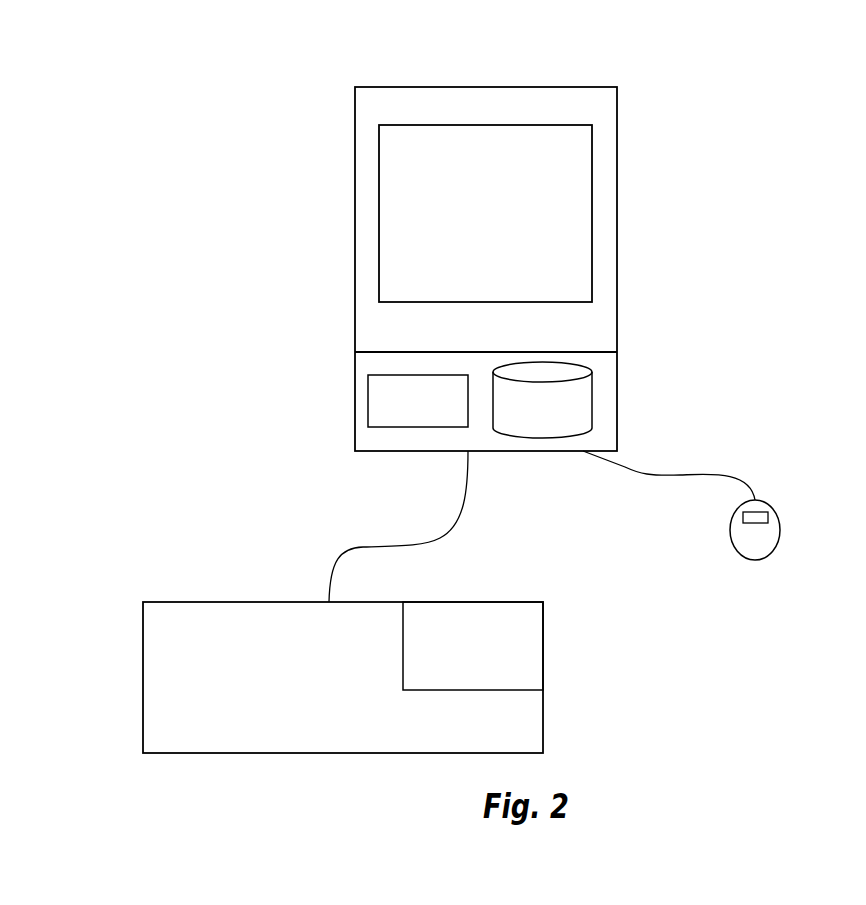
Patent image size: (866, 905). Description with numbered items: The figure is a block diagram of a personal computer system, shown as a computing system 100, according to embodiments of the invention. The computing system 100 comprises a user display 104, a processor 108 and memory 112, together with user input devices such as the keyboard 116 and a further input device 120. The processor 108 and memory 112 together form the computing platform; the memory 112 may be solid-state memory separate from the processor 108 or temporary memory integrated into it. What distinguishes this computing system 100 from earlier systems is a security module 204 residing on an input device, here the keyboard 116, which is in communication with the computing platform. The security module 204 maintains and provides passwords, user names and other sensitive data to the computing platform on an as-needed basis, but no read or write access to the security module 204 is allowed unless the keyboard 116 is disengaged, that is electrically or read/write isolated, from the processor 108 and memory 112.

The computing system 100 is at (760, 93).
The user display 104 is at (355, 200).
The processor 108 is at (370, 401).
The memory 112 is at (592, 400).
The keyboard 116 is at (282, 714).
The user input device 120 is at (780, 525).
The security module 204 is at (543, 662).